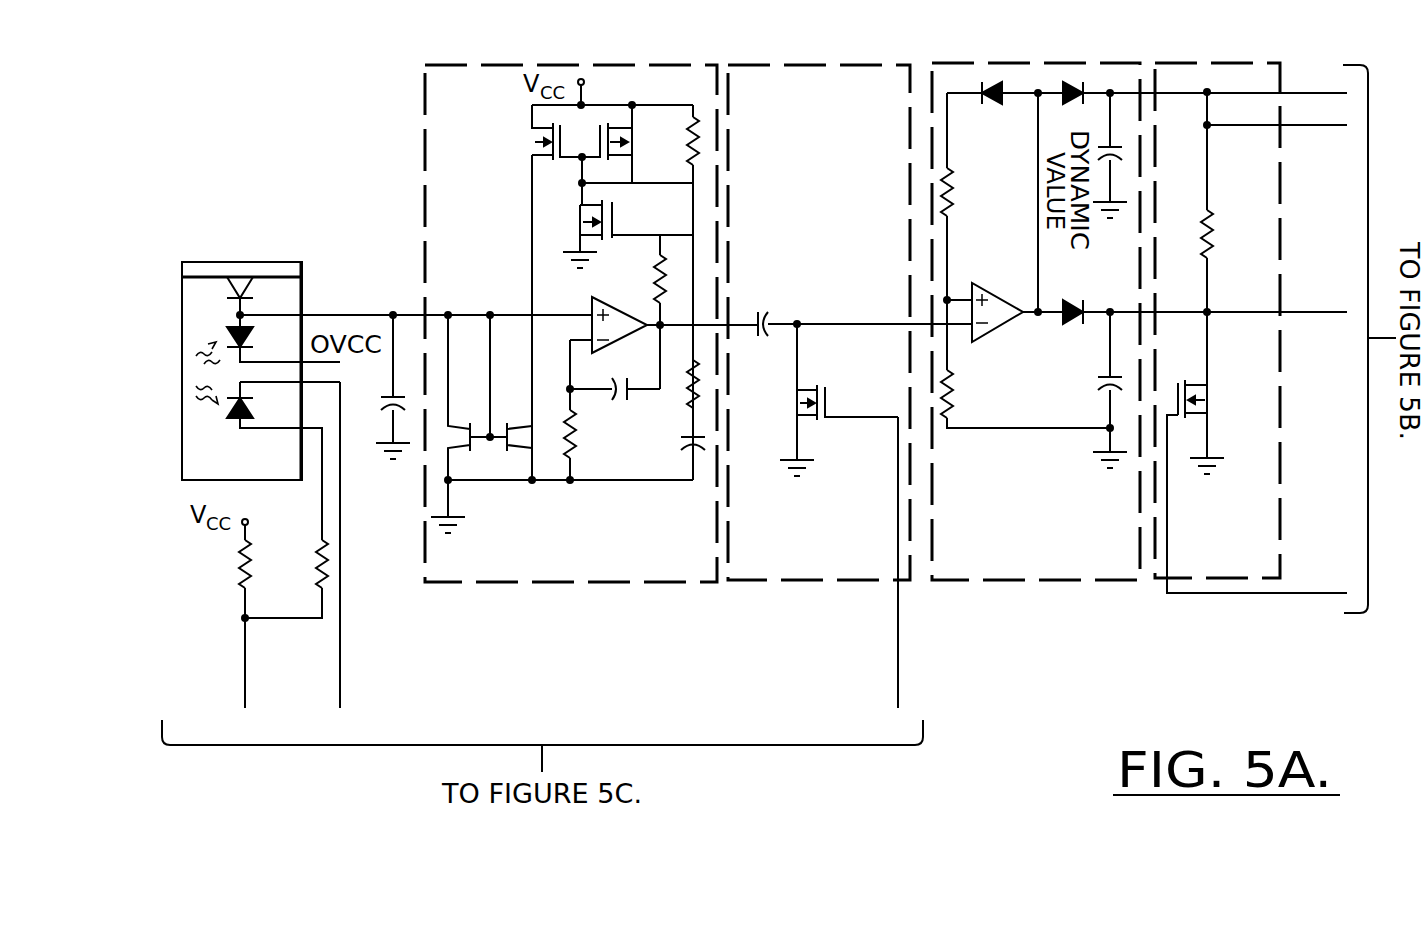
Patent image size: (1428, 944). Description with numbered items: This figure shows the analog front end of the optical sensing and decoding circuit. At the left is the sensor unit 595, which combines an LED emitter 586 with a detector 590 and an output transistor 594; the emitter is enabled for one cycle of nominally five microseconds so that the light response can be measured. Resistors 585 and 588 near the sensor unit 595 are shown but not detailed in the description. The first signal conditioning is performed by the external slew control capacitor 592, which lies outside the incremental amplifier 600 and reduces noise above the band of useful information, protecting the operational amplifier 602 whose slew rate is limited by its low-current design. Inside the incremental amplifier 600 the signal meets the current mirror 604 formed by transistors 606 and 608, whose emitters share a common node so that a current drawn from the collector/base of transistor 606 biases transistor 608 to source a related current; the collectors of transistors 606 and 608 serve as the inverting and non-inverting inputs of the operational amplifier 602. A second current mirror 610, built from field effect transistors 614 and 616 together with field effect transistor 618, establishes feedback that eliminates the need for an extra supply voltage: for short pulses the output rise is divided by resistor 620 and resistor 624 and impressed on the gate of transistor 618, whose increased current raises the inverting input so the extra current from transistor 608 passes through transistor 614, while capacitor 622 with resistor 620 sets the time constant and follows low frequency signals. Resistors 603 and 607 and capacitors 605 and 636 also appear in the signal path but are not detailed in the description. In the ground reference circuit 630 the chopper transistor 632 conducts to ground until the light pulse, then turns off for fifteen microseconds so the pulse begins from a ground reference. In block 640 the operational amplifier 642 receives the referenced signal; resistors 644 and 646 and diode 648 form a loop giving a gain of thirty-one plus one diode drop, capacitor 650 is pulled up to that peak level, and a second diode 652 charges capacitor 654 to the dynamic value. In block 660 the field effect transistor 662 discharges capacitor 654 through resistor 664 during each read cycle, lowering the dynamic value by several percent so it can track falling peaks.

The resistor 585 is at (238, 565).
The LED emitter 586 is at (223, 418).
The resistor 588 is at (318, 548).
The detector 590 is at (226, 333).
The external slew control capacitor 592 is at (381, 403).
The output transistor 594 is at (241, 278).
The sensor unit 595 is at (180, 252).
The incremental amplifier 600 is at (571, 323).
The operational amplifier 602 is at (622, 320).
The resistor 603 is at (573, 452).
The current mirror 604 is at (471, 300).
The capacitor 605 is at (613, 362).
The transistor 606 is at (470, 423).
The resistor 607 is at (700, 150).
The transistor 608 is at (532, 425).
The second current mirror 610 is at (573, 138).
The field effect transistor 614 is at (538, 132).
The field effect transistor 616 is at (628, 130).
The field effect transistor 618 is at (617, 221).
The resistor 620 is at (688, 404).
The capacitor 622 is at (687, 449).
The resistor 624 is at (663, 279).
The ground reference circuit 630 is at (819, 322).
The chopper transistor 632 is at (839, 400).
The capacitor 636 is at (766, 306).
The block 640 is at (1036, 321).
The operational amplifier 642 is at (992, 299).
The resistor 644 is at (1025, 364).
The resistor 646 is at (978, 196).
The diode 648 is at (991, 108).
The capacitor 650 is at (1083, 390).
The second diode 652 is at (1068, 80).
The capacitor 654 is at (1114, 144).
The block 660 is at (1217, 321).
The field effect transistor 662 is at (1257, 486).
The resistor 664 is at (1237, 238).